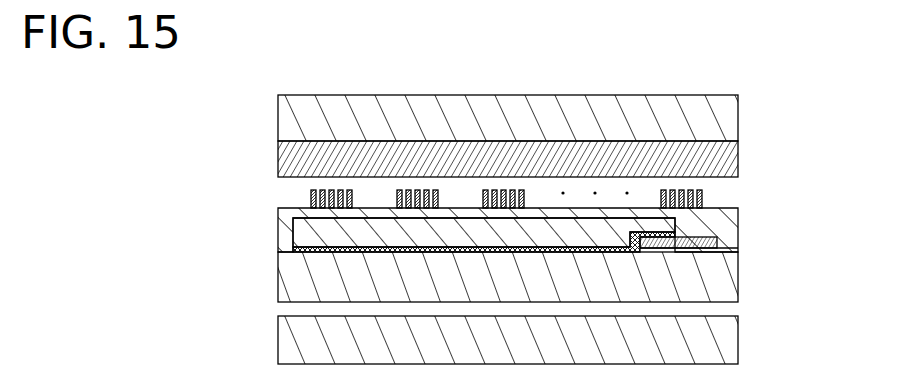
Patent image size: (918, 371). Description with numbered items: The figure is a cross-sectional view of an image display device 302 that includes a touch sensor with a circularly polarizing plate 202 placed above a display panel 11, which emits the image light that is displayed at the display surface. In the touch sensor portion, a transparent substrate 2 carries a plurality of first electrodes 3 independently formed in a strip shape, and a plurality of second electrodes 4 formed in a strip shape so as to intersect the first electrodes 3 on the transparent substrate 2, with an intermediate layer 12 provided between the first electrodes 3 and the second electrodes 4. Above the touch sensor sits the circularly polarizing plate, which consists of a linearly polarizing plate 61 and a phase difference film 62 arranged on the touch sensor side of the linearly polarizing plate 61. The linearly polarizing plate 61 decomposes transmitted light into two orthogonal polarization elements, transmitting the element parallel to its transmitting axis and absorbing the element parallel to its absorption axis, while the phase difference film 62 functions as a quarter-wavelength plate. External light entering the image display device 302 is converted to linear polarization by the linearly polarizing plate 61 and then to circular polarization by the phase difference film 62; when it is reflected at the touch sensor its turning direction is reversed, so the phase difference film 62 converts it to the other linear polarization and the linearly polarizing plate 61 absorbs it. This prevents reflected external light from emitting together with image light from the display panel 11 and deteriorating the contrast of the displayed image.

The image display device 302 is at (232, 190).
The touch sensor with a circularly polarizing plate 202 is at (805, 97).
The linearly polarizing plate 61 is at (693, 113).
The phase difference film 62 is at (705, 155).
The first electrodes 3 is at (703, 193).
The intermediate layer 12 is at (727, 211).
The second electrodes 4 is at (717, 242).
The transparent substrate 2 is at (725, 278).
The display panel 11 is at (695, 335).